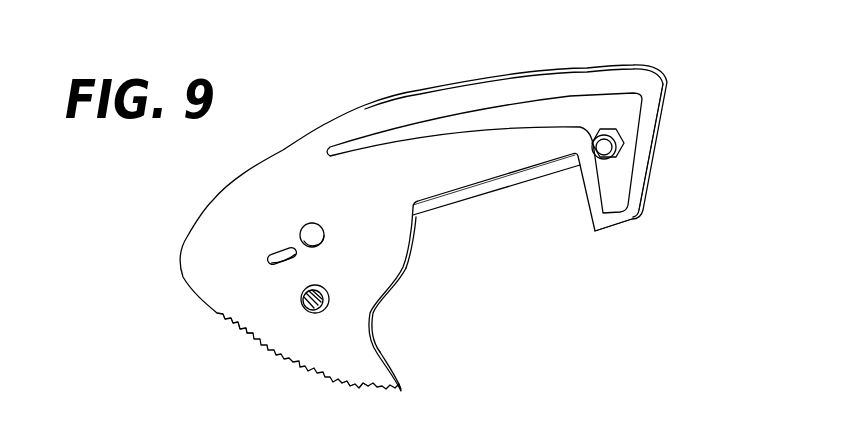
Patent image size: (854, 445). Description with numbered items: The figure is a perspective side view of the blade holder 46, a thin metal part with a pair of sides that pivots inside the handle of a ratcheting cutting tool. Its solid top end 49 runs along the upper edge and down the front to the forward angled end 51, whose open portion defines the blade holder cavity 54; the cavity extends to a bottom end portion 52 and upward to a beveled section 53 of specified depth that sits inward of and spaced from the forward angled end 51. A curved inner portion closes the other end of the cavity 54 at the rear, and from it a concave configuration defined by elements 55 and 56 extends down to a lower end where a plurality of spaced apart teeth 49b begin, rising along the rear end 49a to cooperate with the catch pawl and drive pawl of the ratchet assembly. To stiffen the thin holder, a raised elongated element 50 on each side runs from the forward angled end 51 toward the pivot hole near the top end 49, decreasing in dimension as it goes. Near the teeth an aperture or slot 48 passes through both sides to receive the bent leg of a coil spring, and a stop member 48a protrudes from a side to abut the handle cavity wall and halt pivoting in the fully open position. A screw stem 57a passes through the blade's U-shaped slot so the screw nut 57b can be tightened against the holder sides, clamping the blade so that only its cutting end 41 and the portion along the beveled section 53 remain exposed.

The cutting end 41 is at (299, 238).
The blade holder 46 is at (268, 175).
The aperture or slot 48 is at (268, 262).
The stop member 48a is at (300, 313).
The solid top end 49 is at (366, 106).
The rear end 49a is at (250, 313).
The spaced apart teeth 49b is at (362, 387).
The raised elongated element 50 is at (475, 113).
The forward angled end 51 is at (667, 150).
The bottom end portion 52 is at (625, 220).
The beveled section 53 is at (498, 184).
The blade holder cavity 54 is at (403, 276).
The concave configuration element 55 is at (375, 327).
The concave configuration element 56 is at (390, 367).
The screw stem 57a is at (613, 160).
The screw nut 57b is at (617, 150).